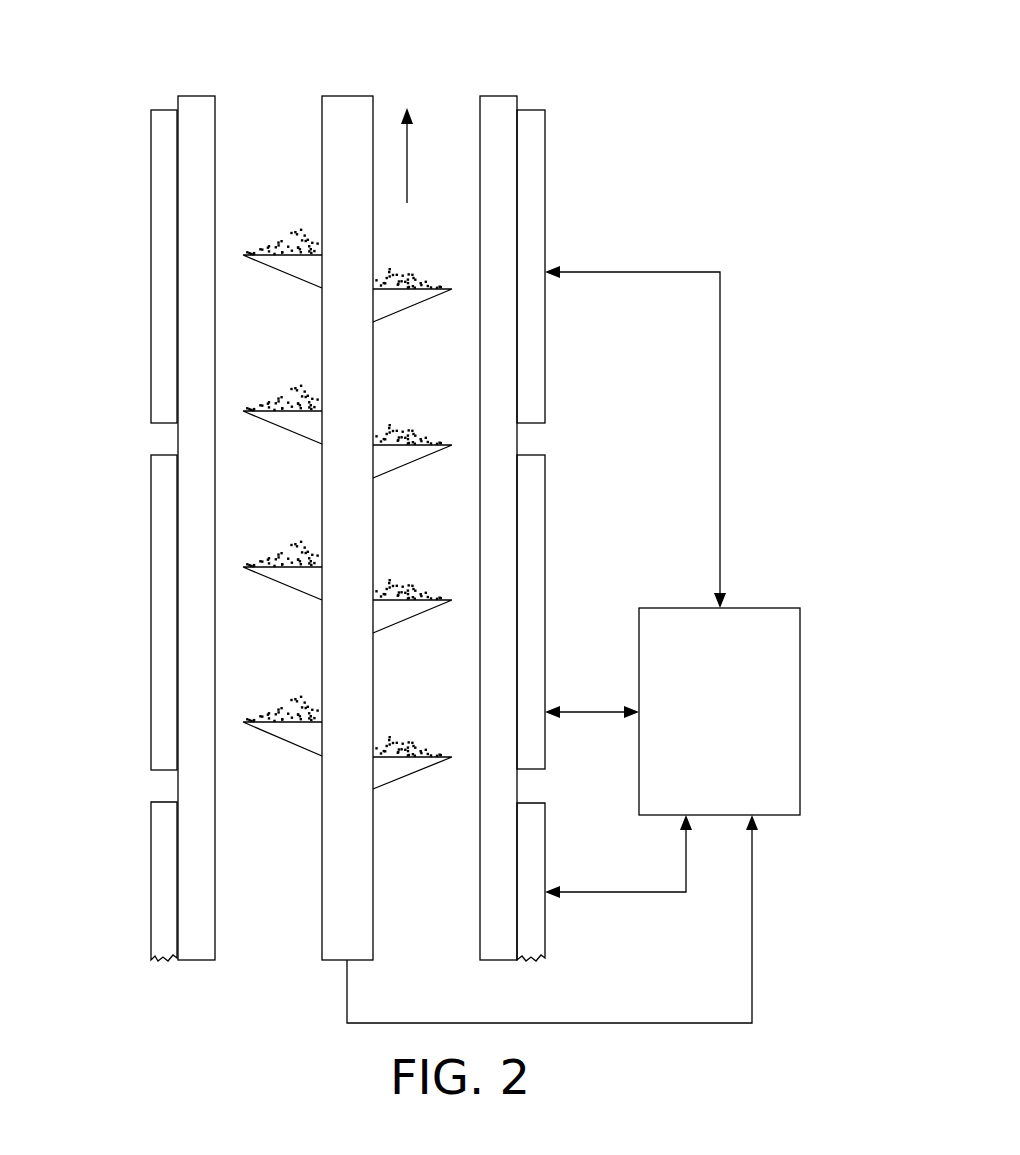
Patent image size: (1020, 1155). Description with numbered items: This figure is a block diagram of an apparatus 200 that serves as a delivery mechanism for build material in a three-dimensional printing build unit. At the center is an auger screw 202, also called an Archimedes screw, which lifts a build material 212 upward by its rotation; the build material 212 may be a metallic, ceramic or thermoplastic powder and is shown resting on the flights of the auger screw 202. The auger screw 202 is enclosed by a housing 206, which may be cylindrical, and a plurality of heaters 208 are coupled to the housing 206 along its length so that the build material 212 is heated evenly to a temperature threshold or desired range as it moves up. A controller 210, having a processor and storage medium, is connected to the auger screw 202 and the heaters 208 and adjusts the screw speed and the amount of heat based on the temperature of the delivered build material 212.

The apparatus 200 is at (652, 98).
The auger screw 202 is at (347, 96).
The housing 206 is at (499, 95).
The heater 208 is at (150, 313).
The controller 210 is at (757, 607).
The build material 212 is at (408, 271).